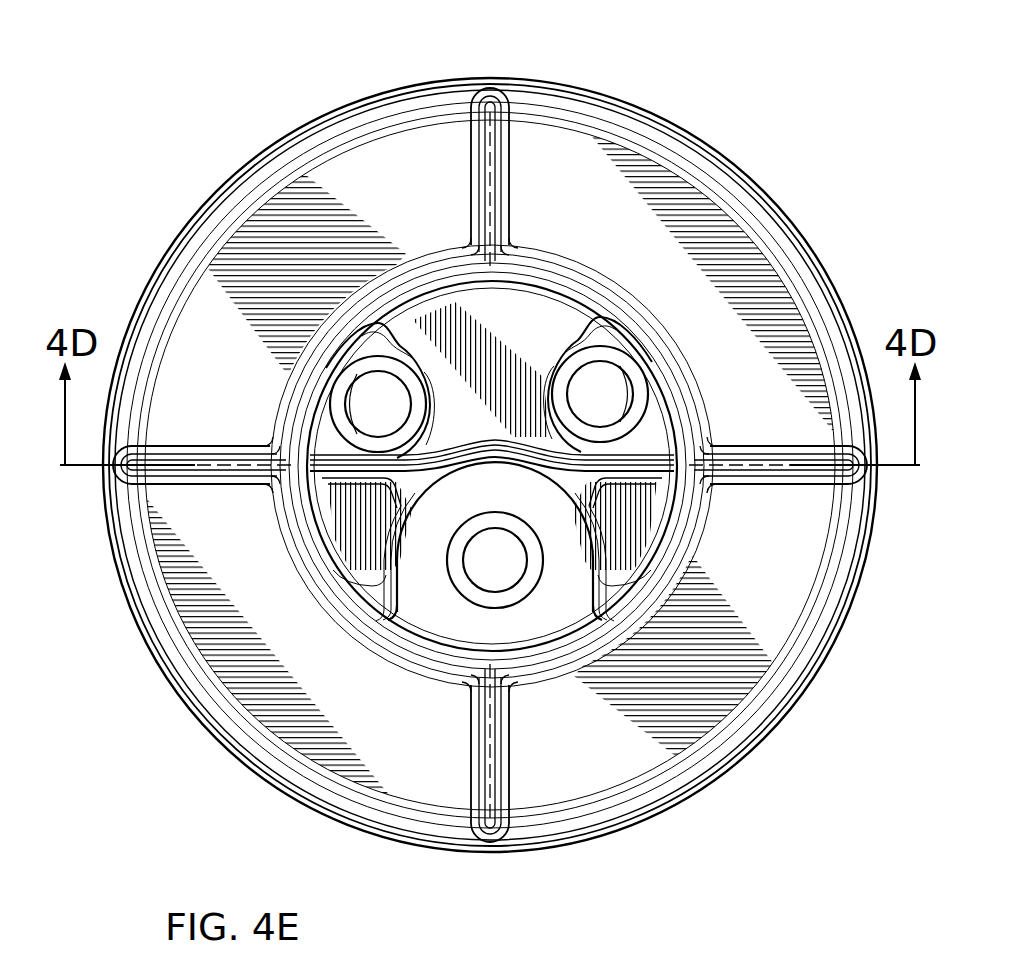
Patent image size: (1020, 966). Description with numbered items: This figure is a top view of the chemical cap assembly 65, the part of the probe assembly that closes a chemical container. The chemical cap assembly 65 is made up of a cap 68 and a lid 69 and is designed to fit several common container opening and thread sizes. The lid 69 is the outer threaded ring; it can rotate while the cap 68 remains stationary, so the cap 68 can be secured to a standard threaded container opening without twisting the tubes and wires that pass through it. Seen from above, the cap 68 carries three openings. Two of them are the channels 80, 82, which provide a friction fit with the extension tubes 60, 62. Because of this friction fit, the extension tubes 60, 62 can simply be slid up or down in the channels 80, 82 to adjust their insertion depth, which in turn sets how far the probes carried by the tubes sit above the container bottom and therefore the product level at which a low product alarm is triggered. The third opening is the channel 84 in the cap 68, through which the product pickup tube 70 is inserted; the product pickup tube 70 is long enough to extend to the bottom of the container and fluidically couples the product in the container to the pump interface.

The chemical cap assembly 65 is at (639, 96).
The lid 69 is at (772, 198).
The cap 68 is at (571, 288).
The extension tube 60 is at (330, 402).
The extension tube 62 is at (628, 368).
The product pickup tube 70 is at (494, 512).
The channel 80 is at (312, 447).
The channel 82 is at (657, 440).
The channel 84 is at (401, 558).